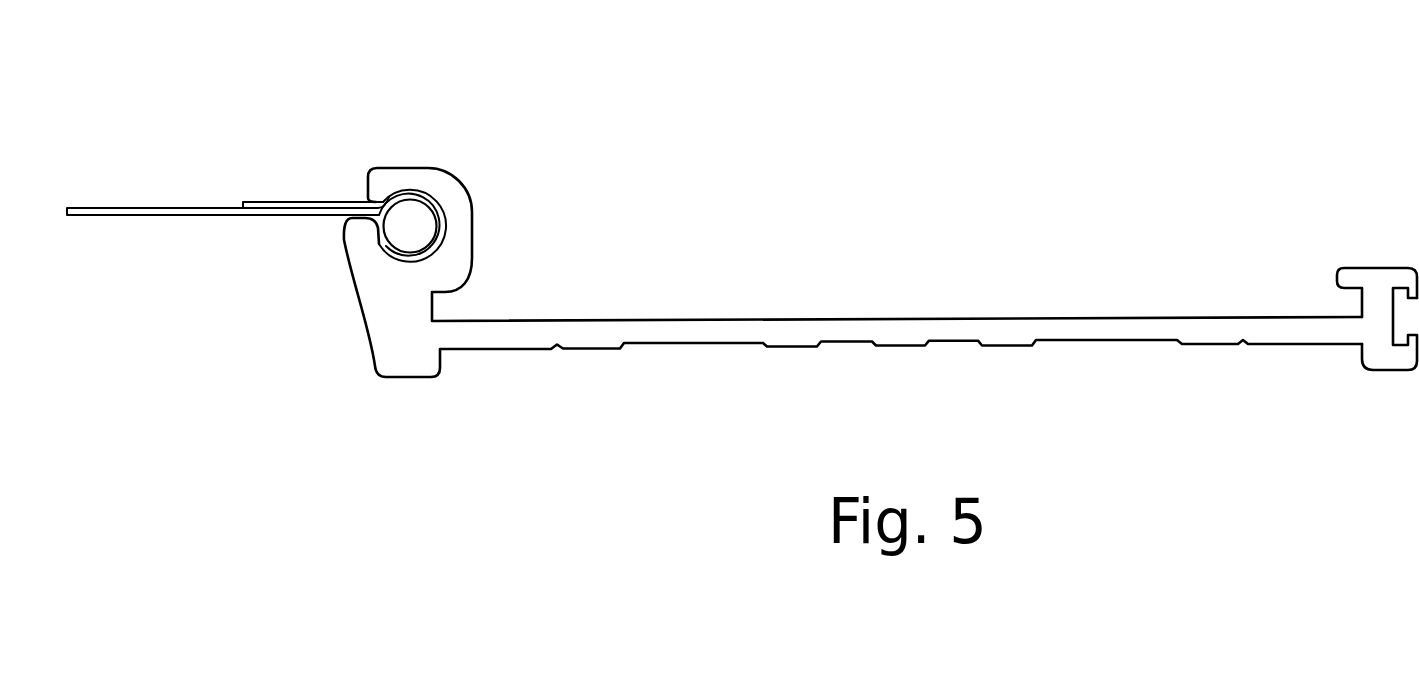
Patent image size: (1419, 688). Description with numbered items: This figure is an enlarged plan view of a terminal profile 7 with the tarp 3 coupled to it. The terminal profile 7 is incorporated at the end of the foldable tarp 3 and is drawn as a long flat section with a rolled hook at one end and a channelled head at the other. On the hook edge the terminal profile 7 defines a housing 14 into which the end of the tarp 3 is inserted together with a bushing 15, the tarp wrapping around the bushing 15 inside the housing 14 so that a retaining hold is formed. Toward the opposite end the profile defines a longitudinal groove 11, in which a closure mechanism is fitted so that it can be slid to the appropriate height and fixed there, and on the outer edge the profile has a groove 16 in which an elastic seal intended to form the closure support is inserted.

The tarp 3 is at (182, 213).
The terminal profile 7 is at (692, 334).
The longitudinal groove 11 is at (1353, 301).
The housing 14 is at (380, 263).
The bushing 15 is at (410, 222).
The groove 16 is at (1402, 307).